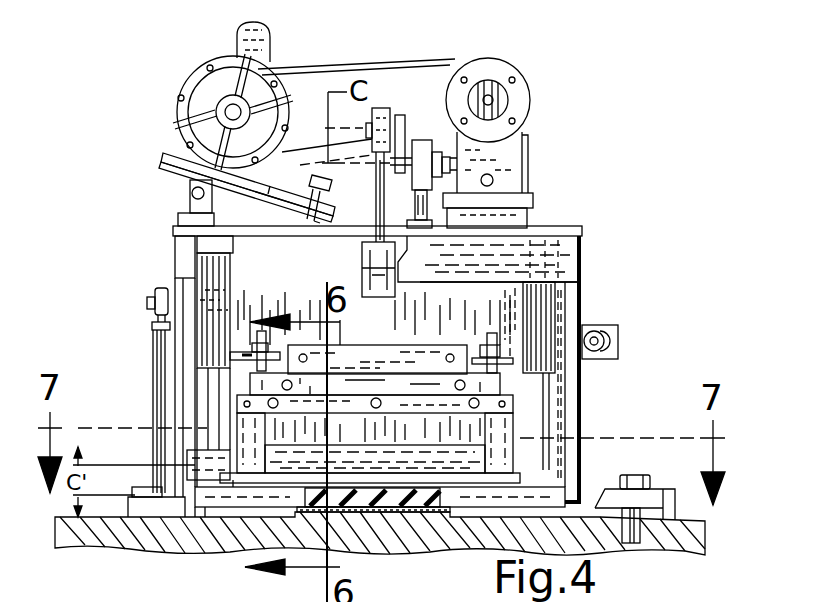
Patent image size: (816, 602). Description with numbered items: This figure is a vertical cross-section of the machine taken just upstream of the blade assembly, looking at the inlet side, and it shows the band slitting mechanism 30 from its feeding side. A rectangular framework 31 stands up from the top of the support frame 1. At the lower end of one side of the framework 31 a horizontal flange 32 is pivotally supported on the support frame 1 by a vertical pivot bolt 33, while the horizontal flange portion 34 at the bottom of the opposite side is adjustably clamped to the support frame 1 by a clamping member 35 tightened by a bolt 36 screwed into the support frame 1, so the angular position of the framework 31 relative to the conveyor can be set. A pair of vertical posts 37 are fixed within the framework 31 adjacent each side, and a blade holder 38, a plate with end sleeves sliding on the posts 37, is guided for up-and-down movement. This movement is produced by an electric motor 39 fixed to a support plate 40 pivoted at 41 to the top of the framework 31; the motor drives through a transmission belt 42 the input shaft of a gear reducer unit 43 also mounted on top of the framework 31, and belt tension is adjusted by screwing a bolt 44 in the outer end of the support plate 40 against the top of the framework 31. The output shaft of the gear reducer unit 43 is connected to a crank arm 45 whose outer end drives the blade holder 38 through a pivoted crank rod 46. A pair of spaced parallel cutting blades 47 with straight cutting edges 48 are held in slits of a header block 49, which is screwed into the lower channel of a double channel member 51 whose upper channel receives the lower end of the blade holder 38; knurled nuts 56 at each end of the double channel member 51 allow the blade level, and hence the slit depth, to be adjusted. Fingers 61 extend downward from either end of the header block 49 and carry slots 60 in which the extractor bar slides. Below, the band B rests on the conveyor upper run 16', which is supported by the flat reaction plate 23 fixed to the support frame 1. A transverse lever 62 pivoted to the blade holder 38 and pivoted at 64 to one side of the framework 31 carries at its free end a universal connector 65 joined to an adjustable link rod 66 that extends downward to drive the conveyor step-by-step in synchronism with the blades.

The support frame 1 is at (672, 545).
The band slitting mechanism 30 is at (600, 212).
The rectangular framework 31 is at (585, 256).
The horizontal flange 32 is at (128, 508).
The vertical pivot bolt 33 is at (151, 487).
The horizontal flange portion 34 is at (602, 527).
The clamping member 35 is at (665, 489).
The bolt 36 is at (640, 478).
The vertical posts 37 is at (557, 393).
The blade holder 38 is at (507, 330).
The electric motor 39 is at (190, 80).
The support plate 40 is at (158, 165).
The pivot 41 is at (190, 192).
The transmission belt 42 is at (368, 62).
The gear reducer unit 43 is at (512, 142).
The bolt 44 is at (305, 208).
The crank arm 45 is at (401, 112).
The pivoted crank rod 46 is at (366, 182).
The cutting blades 47 is at (560, 420).
The cutting edges 48 is at (202, 536).
The header block 49 is at (402, 394).
The double channel member 51 is at (418, 347).
The knurled nut 56 is at (232, 357).
The slots 60 is at (566, 434).
The fingers 61 is at (515, 470).
The transverse lever 62 is at (597, 325).
The pivot 64 is at (607, 332).
The universal connector 65 is at (160, 288).
The link rod 66 is at (159, 392).
The upper run 16' is at (373, 538).
The band B is at (402, 505).
The reaction plate 23 is at (243, 537).